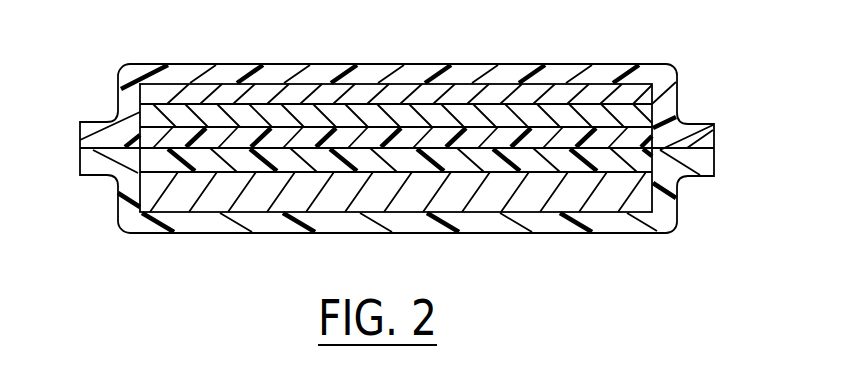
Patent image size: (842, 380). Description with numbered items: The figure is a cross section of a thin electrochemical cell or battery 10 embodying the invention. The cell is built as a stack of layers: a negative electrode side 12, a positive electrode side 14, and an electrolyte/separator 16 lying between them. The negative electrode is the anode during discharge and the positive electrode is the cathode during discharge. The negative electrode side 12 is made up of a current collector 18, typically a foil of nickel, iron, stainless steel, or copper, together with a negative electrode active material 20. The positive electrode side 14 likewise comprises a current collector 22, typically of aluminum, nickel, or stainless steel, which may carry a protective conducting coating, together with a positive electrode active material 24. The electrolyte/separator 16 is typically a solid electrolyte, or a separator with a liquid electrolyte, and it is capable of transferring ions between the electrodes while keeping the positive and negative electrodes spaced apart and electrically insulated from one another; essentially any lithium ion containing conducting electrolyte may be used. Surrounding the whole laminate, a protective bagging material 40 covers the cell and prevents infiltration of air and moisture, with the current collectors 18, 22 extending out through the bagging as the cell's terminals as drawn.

The electrochemical cell or battery 10 is at (416, 120).
The negative electrode side 12 is at (410, 80).
The positive electrode side 14 is at (353, 208).
The electrolyte/separator 16 is at (623, 135).
The current collector 18 is at (487, 92).
The negative electrode active material 20 is at (145, 116).
The current collector 22 is at (143, 208).
The positive electrode active material 24 is at (627, 163).
The protective bagging material 40 is at (608, 228).